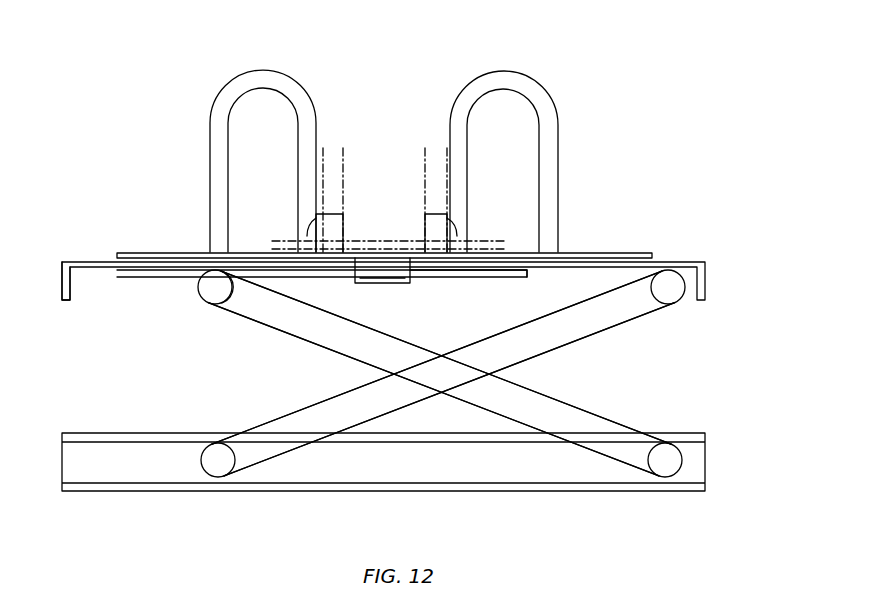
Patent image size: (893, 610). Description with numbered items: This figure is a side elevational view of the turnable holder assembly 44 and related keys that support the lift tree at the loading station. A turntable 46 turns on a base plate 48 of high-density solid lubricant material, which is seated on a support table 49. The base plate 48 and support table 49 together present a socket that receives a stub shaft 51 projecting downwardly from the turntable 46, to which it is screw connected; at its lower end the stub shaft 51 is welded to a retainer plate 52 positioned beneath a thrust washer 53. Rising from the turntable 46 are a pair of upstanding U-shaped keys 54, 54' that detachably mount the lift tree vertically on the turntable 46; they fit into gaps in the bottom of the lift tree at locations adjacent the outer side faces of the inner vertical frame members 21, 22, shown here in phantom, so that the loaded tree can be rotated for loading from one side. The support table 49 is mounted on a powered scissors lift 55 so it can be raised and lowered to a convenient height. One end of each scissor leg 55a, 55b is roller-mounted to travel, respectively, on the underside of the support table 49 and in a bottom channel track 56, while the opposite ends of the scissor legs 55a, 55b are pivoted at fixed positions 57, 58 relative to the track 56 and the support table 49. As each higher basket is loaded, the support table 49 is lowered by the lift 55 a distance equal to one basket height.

The inner vertical frame member 21 is at (332, 148).
The inner vertical frame member 22 is at (435, 150).
The turnable holder assembly 44 is at (652, 248).
The turntable 46 is at (611, 252).
The base plate 48 is at (155, 262).
The support table 49 is at (710, 262).
The stub shaft 51 is at (378, 260).
The retainer plate 52 is at (430, 277).
The thrust washer 53 is at (490, 277).
The U-shaped key 54 is at (246, 141).
The U-shaped key 54' is at (538, 155).
The powered scissors lift 55 is at (403, 352).
The scissor leg 55a is at (636, 307).
The scissor leg 55b is at (600, 427).
The bottom channel track 56 is at (437, 463).
The fixed pivot position 57 is at (205, 478).
The fixed pivot position 58 is at (214, 300).